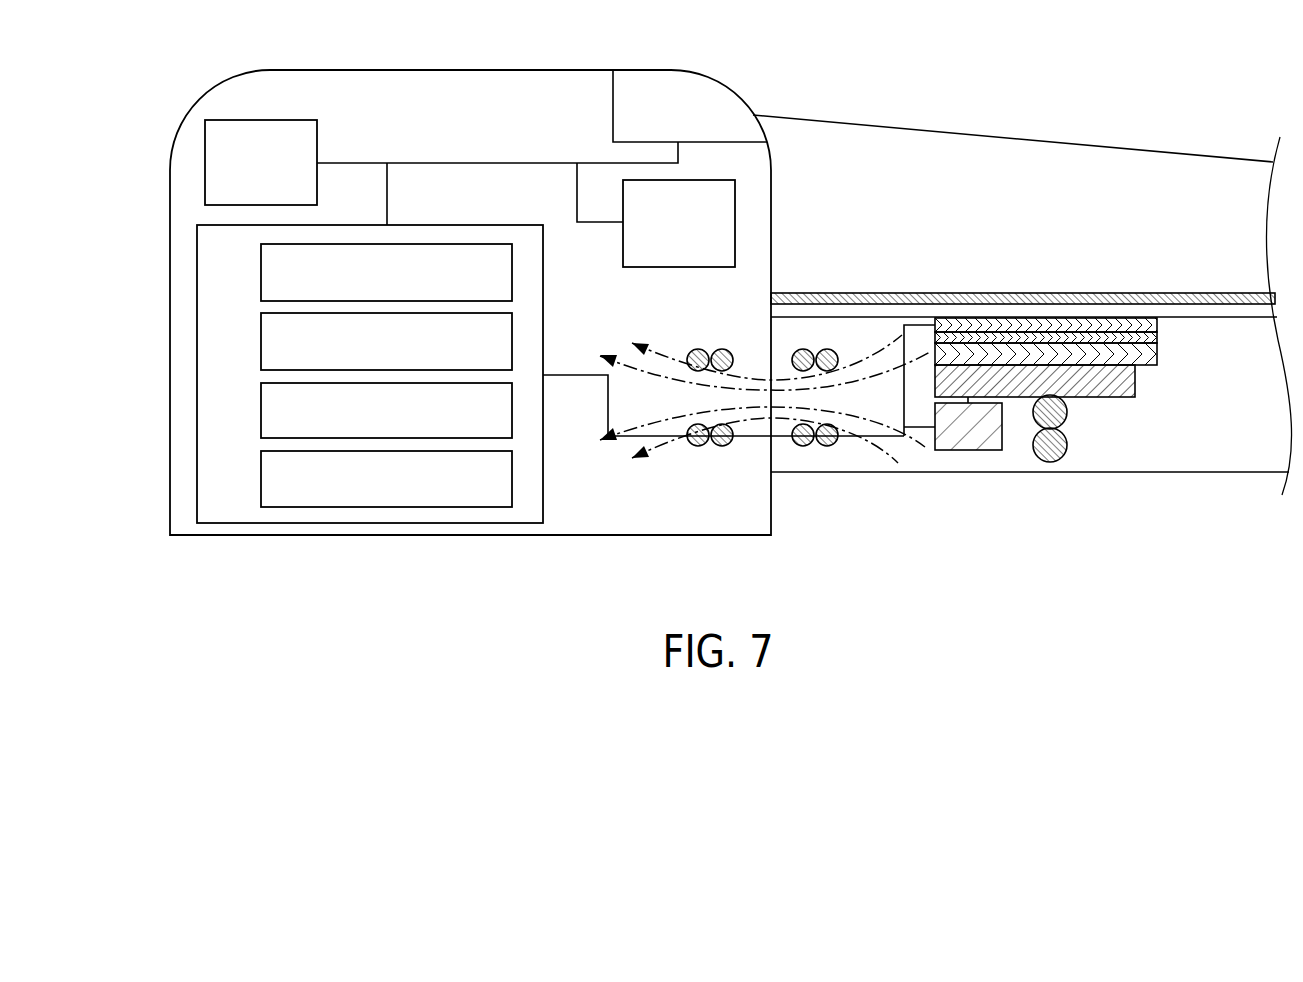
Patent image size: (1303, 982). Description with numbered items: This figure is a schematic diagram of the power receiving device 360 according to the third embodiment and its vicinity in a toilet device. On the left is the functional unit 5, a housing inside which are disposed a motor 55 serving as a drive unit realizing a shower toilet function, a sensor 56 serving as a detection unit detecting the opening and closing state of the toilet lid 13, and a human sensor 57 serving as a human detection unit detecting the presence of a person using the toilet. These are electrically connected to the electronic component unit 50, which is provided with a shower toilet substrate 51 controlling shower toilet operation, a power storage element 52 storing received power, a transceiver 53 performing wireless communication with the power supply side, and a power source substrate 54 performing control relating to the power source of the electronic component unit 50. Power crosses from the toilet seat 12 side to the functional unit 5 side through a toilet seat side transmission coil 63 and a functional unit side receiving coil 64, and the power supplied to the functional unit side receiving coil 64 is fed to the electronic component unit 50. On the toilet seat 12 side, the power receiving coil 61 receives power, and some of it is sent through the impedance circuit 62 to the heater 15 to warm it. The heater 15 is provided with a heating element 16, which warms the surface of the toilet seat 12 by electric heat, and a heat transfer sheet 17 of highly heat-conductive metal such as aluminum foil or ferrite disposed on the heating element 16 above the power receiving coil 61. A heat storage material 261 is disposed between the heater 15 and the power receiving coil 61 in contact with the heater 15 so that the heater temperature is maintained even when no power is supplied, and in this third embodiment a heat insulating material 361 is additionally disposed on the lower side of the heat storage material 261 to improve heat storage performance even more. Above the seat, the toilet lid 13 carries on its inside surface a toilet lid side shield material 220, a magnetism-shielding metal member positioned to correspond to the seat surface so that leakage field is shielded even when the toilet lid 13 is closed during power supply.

The functional unit 5 is at (170, 218).
The toilet seat 12 is at (1190, 338).
The toilet lid 13 is at (953, 140).
The heater 15 is at (1046, 276).
The heating element 16 is at (1097, 258).
The heat transfer sheet 17 is at (1070, 319).
The electronic component unit 50 is at (188, 352).
The shower toilet substrate 51 is at (261, 272).
The power storage element 52 is at (261, 340).
The transceiver 53 is at (261, 409).
The power source substrate 54 is at (261, 479).
The motor 55 is at (266, 102).
The sensor 56 is at (623, 246).
The human sensor 57 is at (711, 103).
The power receiving coil 61 is at (1045, 462).
The impedance circuit 62 is at (967, 450).
The toilet seat side transmission coil 63 is at (808, 447).
The functional unit side receiving coil 64 is at (710, 446).
The toilet lid side shield material 220 is at (1140, 294).
The heat storage material 261 is at (1157, 352).
The power receiving device 360 is at (882, 326).
The heat insulating material 361 is at (1118, 375).